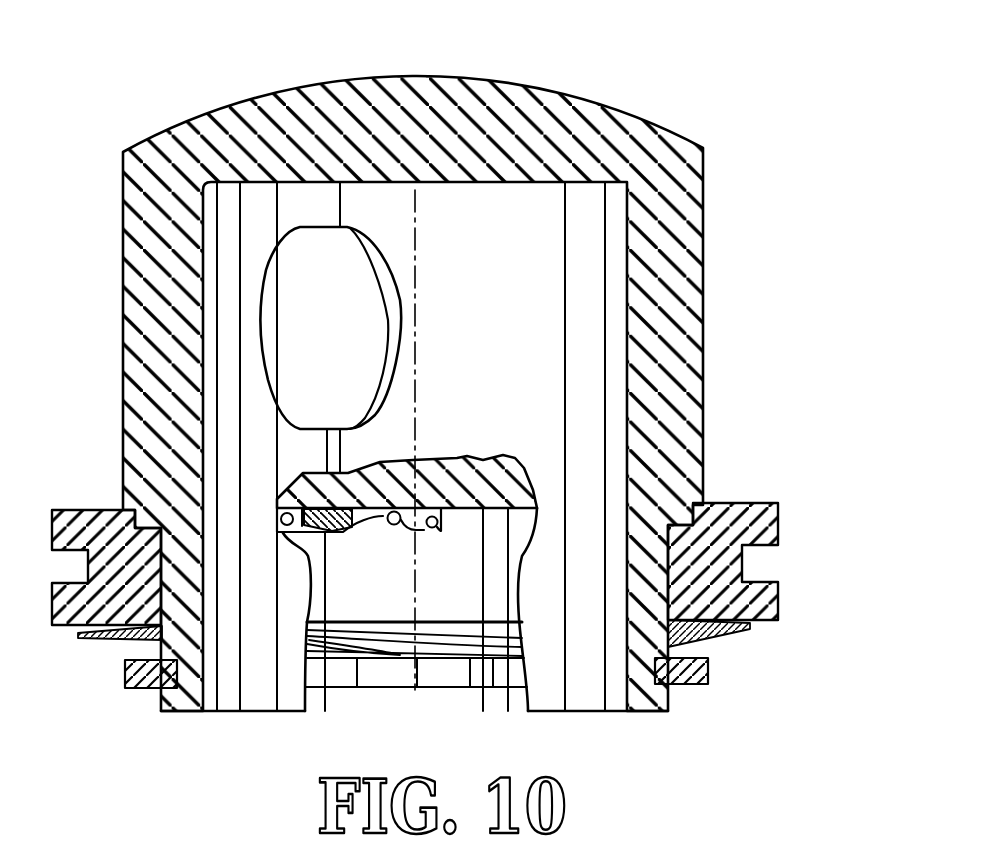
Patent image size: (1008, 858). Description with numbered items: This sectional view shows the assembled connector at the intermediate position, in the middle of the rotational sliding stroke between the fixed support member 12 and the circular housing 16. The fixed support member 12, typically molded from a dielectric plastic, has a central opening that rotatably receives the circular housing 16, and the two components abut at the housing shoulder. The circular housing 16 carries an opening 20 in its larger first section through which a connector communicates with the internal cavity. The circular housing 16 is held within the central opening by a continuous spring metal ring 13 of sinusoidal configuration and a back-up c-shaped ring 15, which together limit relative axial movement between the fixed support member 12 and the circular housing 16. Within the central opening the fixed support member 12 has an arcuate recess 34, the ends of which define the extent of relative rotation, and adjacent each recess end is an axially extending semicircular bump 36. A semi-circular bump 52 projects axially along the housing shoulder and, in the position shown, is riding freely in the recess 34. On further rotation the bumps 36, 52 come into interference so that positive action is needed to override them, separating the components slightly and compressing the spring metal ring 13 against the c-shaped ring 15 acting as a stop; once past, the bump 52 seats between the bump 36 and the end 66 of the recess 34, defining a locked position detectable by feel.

The fixed support member 12 is at (756, 497).
The continuous spring metal ring 13 is at (720, 636).
The back-up c-shaped ring 15 is at (693, 685).
The circular housing 16 is at (682, 124).
The opening 20 is at (388, 343).
The arcuate recess 34 is at (278, 512).
The semicircular bump 36 is at (404, 526).
The semi-circular bump 52 is at (335, 517).
The end of recess 66 is at (426, 526).